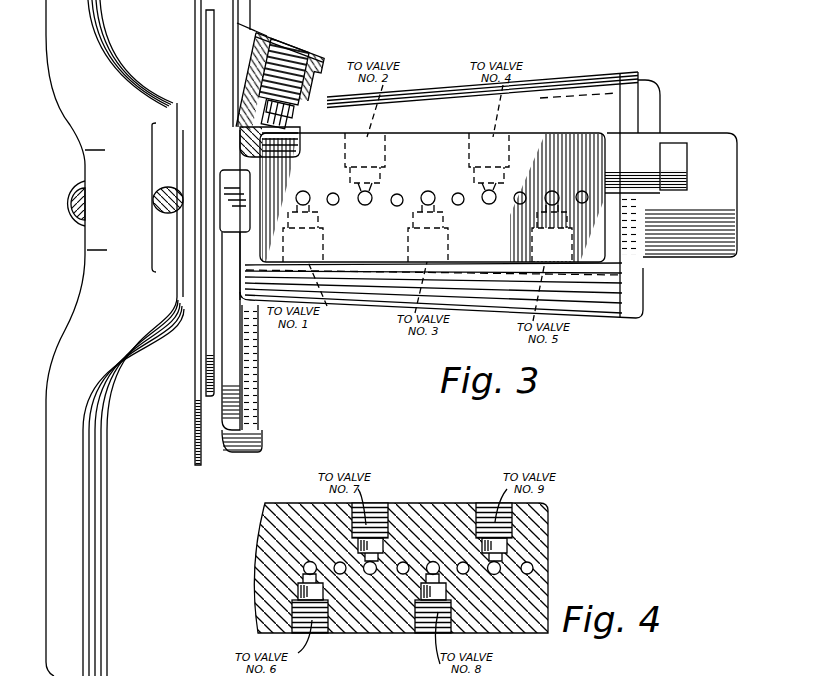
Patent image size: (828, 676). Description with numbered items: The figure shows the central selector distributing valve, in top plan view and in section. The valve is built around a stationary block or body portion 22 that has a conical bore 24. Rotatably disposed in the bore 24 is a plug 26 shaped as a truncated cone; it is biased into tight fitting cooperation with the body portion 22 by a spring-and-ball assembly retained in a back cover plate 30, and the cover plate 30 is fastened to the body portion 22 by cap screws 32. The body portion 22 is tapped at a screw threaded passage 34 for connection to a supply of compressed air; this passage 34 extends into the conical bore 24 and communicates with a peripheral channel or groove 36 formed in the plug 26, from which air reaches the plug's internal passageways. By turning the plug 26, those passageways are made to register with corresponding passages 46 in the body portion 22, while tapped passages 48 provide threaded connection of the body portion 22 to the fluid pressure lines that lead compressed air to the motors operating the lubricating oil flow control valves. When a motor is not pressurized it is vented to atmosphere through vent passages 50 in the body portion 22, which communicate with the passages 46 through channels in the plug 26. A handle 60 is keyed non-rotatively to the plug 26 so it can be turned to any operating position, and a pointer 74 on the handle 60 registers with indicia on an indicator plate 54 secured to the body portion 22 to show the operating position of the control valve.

In FIG. 3, the body portion 22 is at (593, 82).
In FIG. 4, the body portion 22 is at (533, 525).
In FIG. 3, the conical bore 24 is at (297, 118).
In FIG. 3, the plug 26 is at (287, 136).
In FIG. 3, the back cover plate 30 is at (717, 147).
In FIG. 3, the cap screws 32 is at (673, 157).
In FIG. 3, the screw threaded passage 34 is at (293, 53).
In FIG. 3, the peripheral channel 36 is at (268, 147).
In FIG. 3, the passages 46 is at (359, 193).
In FIG. 3, the tapped passages 48 is at (470, 152).
In FIG. 4, the tapped passages 48 is at (483, 503).
In FIG. 3, the vent passages 50 is at (335, 204).
In FIG. 3, the indicator plate 54 is at (198, 405).
In FIG. 3, the handle 60 is at (108, 67).
In FIG. 3, the pointer 74 is at (165, 194).